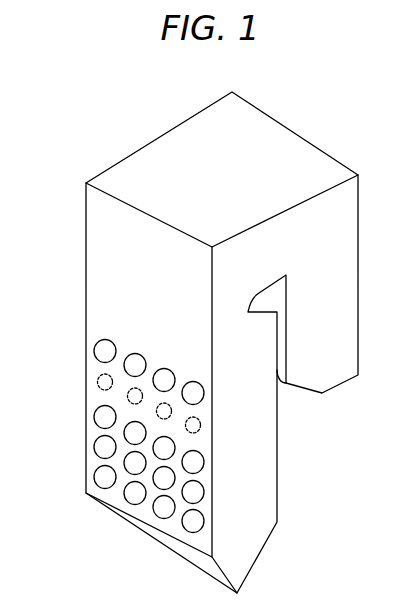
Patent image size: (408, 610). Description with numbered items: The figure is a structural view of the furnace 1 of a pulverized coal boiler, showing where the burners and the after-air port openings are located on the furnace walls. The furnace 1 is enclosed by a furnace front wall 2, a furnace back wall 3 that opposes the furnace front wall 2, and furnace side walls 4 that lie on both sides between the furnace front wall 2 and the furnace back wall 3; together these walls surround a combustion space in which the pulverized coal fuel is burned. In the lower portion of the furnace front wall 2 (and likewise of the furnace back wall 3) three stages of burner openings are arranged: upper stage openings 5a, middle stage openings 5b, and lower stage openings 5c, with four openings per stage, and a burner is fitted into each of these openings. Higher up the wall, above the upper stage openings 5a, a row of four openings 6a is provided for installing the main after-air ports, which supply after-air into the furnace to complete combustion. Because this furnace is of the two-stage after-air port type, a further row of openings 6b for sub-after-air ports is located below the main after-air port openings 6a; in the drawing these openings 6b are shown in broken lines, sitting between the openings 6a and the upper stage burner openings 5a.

The furnace 1 is at (215, 189).
The furnace front wall 2 is at (105, 283).
The furnace back wall 3 is at (277, 445).
The furnace side walls 4 is at (250, 505).
The upper stage openings 5a is at (94, 418).
The middle stage openings 5b is at (94, 448).
The lower stage openings 5c is at (94, 478).
The openings for installing after-air ports 6a is at (94, 351).
The openings for setting up sub-after-air ports 6b is at (97, 380).